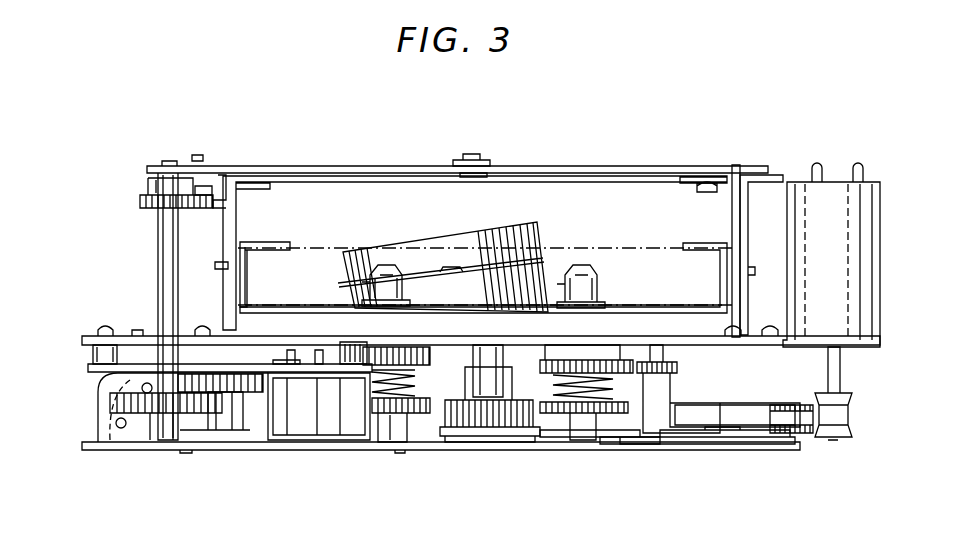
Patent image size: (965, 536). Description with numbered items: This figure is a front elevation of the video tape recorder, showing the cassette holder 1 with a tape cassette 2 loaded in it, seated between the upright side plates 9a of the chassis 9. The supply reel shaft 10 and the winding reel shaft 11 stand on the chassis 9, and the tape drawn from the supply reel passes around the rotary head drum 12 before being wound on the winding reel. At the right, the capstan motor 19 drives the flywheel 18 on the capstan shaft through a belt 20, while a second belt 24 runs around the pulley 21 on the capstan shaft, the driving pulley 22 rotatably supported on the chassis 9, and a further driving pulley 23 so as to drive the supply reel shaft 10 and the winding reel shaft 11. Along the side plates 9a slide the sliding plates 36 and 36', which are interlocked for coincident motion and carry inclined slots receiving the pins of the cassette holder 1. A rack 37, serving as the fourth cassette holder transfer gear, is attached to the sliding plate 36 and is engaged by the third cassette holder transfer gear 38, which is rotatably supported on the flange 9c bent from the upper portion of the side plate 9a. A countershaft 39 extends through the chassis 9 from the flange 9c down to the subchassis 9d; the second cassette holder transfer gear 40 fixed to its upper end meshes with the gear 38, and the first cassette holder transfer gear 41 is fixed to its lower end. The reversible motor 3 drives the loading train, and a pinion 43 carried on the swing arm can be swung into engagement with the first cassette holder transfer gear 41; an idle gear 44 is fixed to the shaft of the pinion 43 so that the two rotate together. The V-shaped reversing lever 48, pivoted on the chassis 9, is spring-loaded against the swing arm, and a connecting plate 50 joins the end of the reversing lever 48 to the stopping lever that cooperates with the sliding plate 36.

The cassette holder 1 is at (278, 242).
The tape cassette 2 is at (653, 265).
The reversible motor 3 is at (98, 402).
The chassis 9 is at (85, 336).
The side plate 9a is at (236, 215).
The flange 9c is at (157, 166).
The subchassis 9d is at (400, 445).
The supply reel shaft 10 is at (390, 275).
The winding reel shaft 11 is at (590, 275).
The rotary head drum 12 is at (522, 222).
The flywheel 18 is at (805, 433).
The capstan motor 19 is at (876, 275).
The belt 20 is at (853, 420).
The pulley 21 is at (750, 444).
The driving pulley 22 is at (535, 437).
The driving pulley 23 is at (680, 440).
The belt 24 is at (632, 437).
The sliding plate 36 is at (173, 274).
The sliding plate 36' is at (786, 255).
The rack 37 is at (222, 185).
The third cassette holder transfer gear 38 is at (205, 195).
The countershaft 39 is at (165, 248).
The second cassette holder transfer gear 40 is at (140, 203).
The first cassette holder transfer gear 41 is at (195, 405).
The pinion 43 is at (230, 425).
The idle gear 44 is at (250, 395).
The reversing lever 48 is at (92, 372).
The connecting plate 50 is at (90, 364).